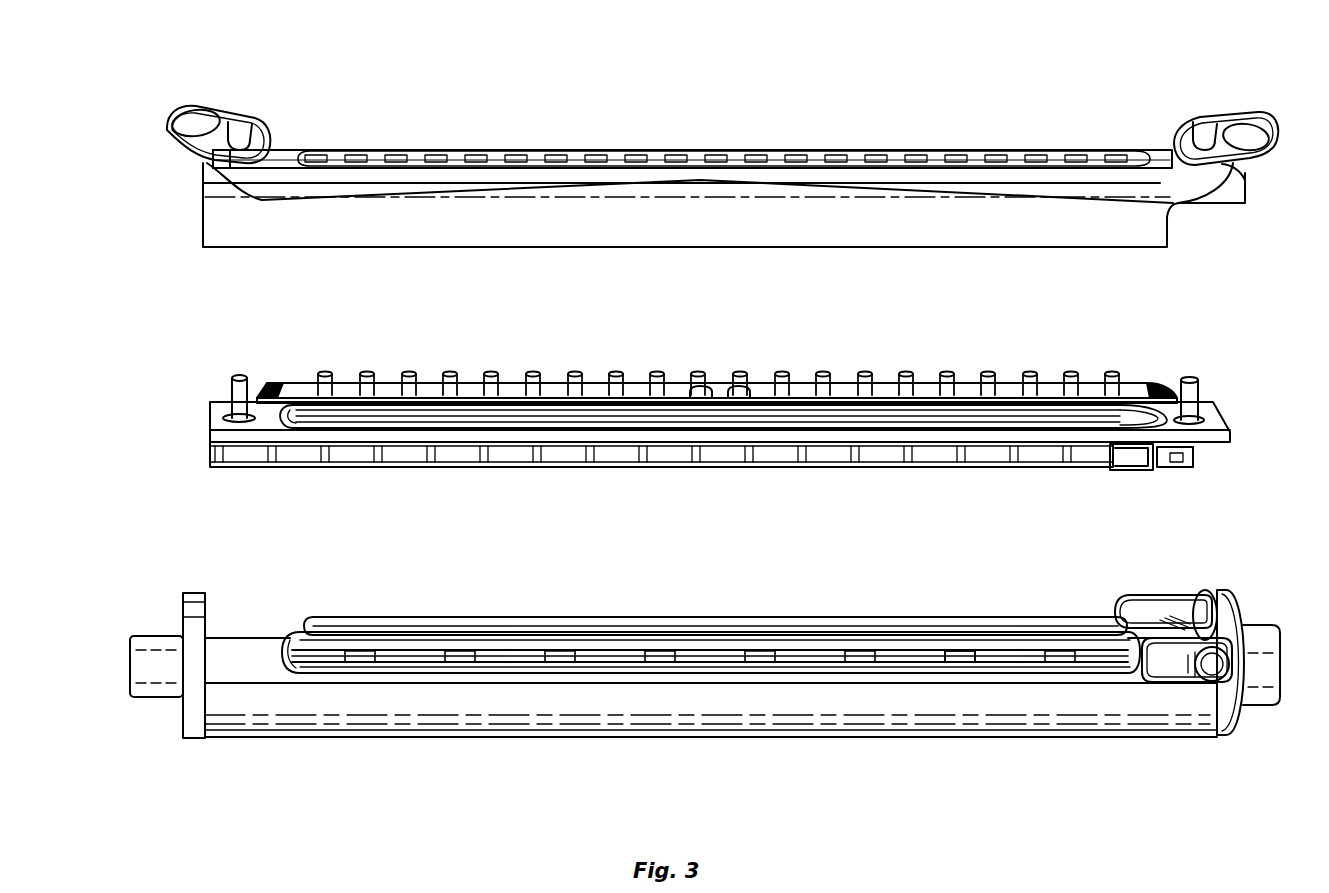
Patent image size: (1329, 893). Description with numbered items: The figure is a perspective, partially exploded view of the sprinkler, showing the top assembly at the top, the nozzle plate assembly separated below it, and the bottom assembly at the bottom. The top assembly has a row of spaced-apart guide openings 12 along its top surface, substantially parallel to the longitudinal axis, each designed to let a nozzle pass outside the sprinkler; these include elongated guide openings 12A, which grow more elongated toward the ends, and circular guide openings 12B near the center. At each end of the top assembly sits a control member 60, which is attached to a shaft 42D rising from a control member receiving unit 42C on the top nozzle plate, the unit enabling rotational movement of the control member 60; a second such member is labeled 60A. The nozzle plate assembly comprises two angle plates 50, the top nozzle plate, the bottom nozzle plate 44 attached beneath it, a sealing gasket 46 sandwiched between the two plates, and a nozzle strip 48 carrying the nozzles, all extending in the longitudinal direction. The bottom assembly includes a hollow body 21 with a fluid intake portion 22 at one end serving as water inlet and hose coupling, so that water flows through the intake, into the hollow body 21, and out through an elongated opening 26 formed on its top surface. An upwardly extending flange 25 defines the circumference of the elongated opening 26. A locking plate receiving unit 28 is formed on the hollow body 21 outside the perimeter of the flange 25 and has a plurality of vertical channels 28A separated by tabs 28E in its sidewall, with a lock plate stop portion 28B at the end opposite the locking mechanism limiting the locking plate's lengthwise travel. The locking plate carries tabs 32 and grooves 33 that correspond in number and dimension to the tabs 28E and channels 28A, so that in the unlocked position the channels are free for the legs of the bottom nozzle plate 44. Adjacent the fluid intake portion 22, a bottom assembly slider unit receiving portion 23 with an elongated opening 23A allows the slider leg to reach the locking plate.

The guide openings 12 is at (830, 150).
The elongated guide openings 12A is at (660, 150).
The circular guide openings 12B is at (285, 148).
The control member 60 is at (1218, 108).
The hinge 60A is at (214, 114).
The control member receiving unit 42C is at (1213, 430).
The shaft 42D is at (1196, 398).
The bottom nozzle plate 44 is at (820, 452).
The sealing gasket 46 is at (443, 418).
The nozzle strip 48 is at (867, 372).
The angle plates 50 is at (1148, 374).
The lock plate stop portion 28B is at (1172, 460).
The hollow body 21 is at (205, 718).
The fluid intake portion 22 is at (1217, 733).
The bottom assembly slider unit receiving portion 23 is at (1157, 596).
The elongated opening 23A is at (1172, 680).
The flange 25 is at (665, 638).
The elongated opening 26 is at (440, 617).
The locking plate receiving unit 28 is at (1218, 660).
The vertical channels 28A is at (565, 660).
The tabs 28E is at (510, 662).
The tabs 32 is at (900, 660).
The grooves 33 is at (960, 655).